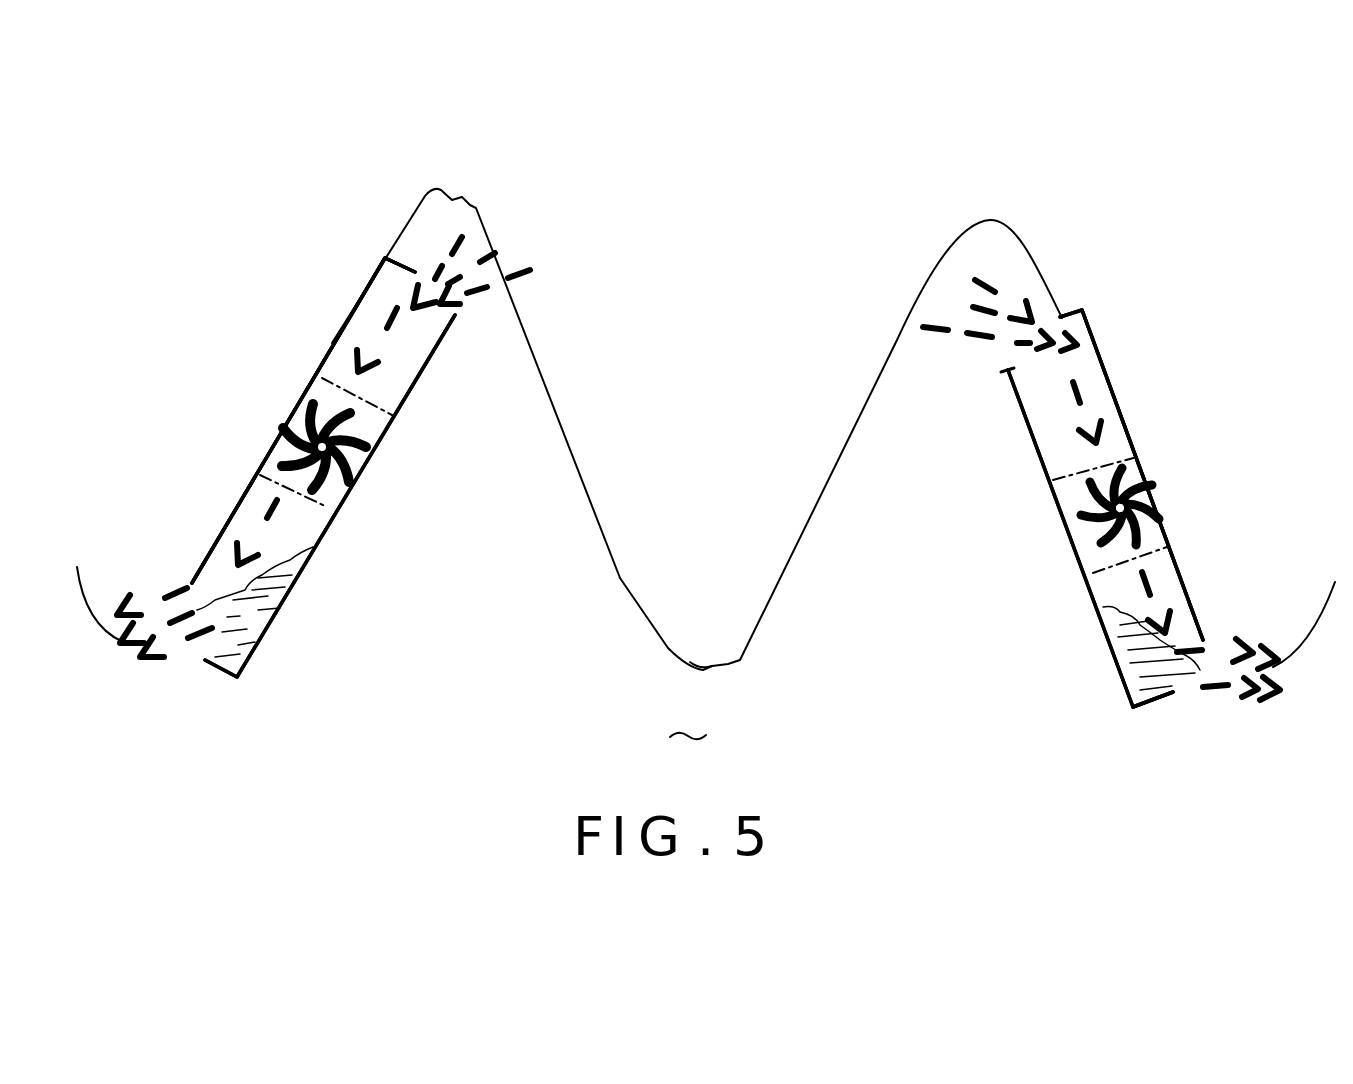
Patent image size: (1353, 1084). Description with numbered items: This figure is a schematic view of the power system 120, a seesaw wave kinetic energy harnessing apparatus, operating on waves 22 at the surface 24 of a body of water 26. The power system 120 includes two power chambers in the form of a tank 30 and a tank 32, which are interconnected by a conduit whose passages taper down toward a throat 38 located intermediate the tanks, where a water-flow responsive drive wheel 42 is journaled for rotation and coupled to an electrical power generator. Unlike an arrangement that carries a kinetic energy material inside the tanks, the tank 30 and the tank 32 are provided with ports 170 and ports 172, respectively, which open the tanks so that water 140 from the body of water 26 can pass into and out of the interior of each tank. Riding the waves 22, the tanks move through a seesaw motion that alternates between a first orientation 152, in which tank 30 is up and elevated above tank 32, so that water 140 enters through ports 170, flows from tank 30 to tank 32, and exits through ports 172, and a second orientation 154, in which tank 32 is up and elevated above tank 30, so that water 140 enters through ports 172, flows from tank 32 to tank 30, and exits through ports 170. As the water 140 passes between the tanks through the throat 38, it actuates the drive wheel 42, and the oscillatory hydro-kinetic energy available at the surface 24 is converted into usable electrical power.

The waves 22 is at (557, 413).
The surface 24 is at (705, 670).
The body of water 26 is at (692, 717).
The tank 30 is at (372, 276).
The tank 32 is at (242, 497).
The throat 38 is at (353, 462).
The drive wheel 42 is at (347, 485).
The power system 120 is at (315, 350).
The water 140 is at (260, 625).
The first orientation 152 is at (272, 409).
The second orientation 154 is at (1178, 516).
The ports 170 is at (422, 272).
The ports 172 is at (192, 657).